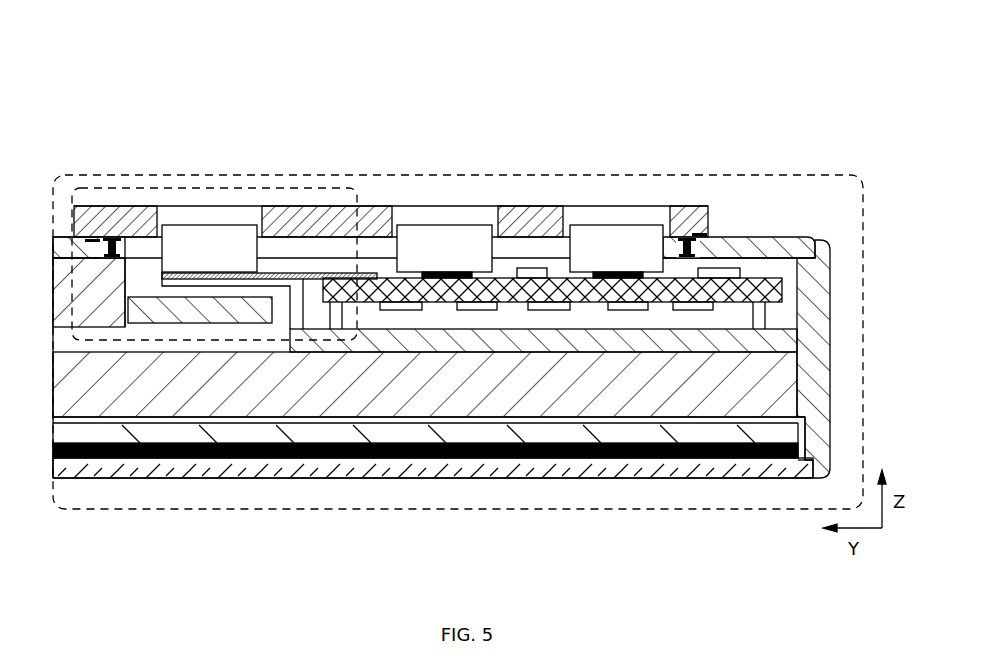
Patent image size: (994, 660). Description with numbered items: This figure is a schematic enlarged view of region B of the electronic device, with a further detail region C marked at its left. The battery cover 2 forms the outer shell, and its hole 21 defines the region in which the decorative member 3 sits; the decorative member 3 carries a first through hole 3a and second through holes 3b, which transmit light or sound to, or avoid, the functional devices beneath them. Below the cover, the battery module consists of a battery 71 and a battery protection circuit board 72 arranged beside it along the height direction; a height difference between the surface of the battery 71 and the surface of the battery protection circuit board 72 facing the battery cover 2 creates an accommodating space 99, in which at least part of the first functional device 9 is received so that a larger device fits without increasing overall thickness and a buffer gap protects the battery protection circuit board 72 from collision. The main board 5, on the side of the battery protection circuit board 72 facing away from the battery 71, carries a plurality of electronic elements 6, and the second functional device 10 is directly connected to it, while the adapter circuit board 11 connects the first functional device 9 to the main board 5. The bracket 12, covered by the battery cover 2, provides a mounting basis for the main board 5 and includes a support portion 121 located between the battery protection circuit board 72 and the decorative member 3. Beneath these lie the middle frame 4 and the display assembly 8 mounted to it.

The battery cover 2 is at (780, 240).
The decorative member 3 is at (707, 218).
The first through hole 3a is at (238, 217).
The second through hole 3b is at (477, 217).
The middle frame 4 is at (690, 388).
The main board 5 is at (440, 293).
The electronic element 6 is at (478, 306).
The display assembly 8 is at (752, 468).
The first functional device 9 is at (190, 240).
The second functional device 10 is at (427, 238).
The adapter circuit board 11 is at (305, 274).
The bracket 12 is at (607, 341).
The hole 21 is at (150, 247).
The battery 71 is at (100, 303).
The battery protection circuit board 72 is at (240, 310).
The accommodating space 99 is at (145, 279).
The support portion 121 is at (203, 284).
The region B is at (72, 58).
The region C is at (73, 188).